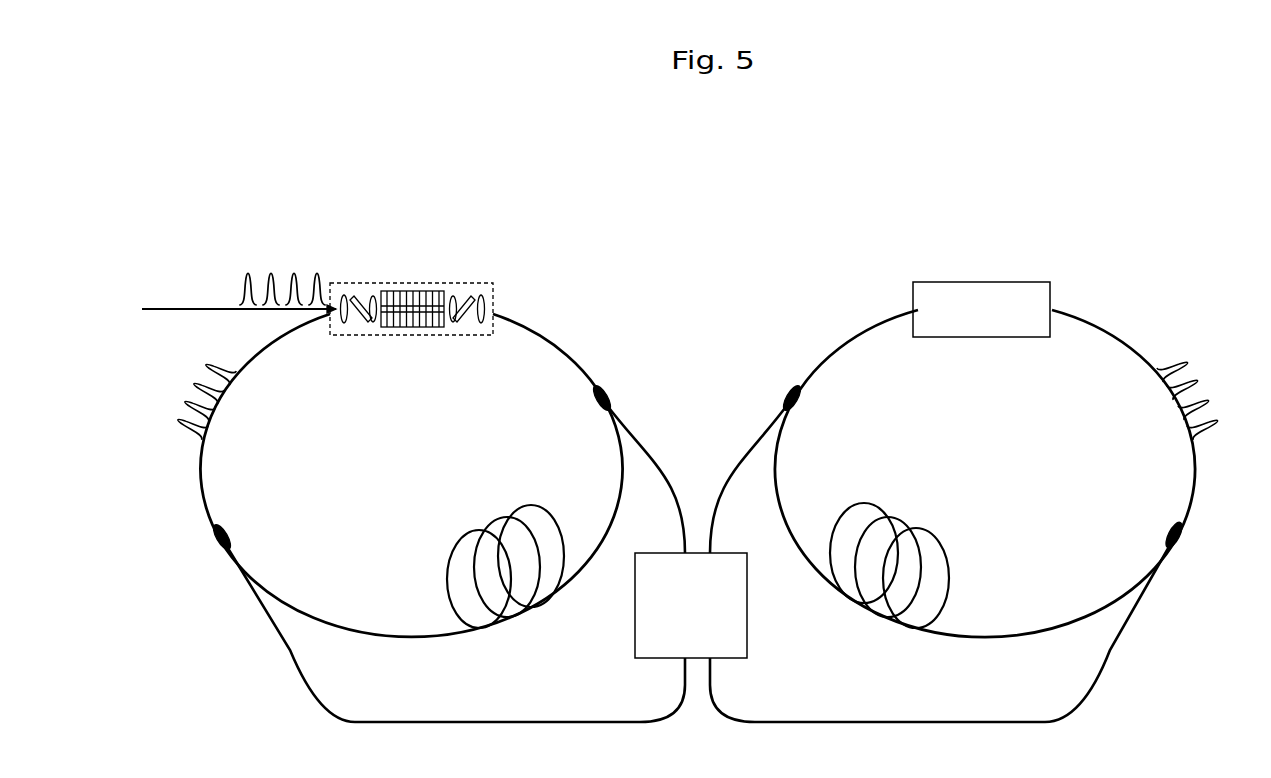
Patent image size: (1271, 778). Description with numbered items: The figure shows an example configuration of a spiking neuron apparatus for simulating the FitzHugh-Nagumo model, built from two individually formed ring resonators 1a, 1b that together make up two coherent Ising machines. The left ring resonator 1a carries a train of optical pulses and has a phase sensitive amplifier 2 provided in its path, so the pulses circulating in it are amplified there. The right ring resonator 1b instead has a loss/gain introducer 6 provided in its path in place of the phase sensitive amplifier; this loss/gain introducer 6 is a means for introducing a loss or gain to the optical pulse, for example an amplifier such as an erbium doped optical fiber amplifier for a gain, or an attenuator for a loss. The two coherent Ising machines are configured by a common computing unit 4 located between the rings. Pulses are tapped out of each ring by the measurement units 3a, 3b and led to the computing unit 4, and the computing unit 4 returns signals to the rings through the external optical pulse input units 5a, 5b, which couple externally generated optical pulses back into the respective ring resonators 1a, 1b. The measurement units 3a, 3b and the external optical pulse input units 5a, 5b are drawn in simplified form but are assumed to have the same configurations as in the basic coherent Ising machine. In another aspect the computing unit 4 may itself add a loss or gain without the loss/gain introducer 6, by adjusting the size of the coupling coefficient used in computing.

The ring resonator 1a is at (543, 331).
The ring resonator 1b is at (1113, 331).
The phase sensitive amplifier 2 is at (470, 282).
The measurement unit 3a is at (607, 390).
The measurement unit 3b is at (1182, 543).
The computing unit 4 is at (697, 663).
The external optical pulse input unit 5a is at (213, 546).
The external optical pulse input unit 5b is at (788, 390).
The loss/gain introducer 6 is at (1022, 282).